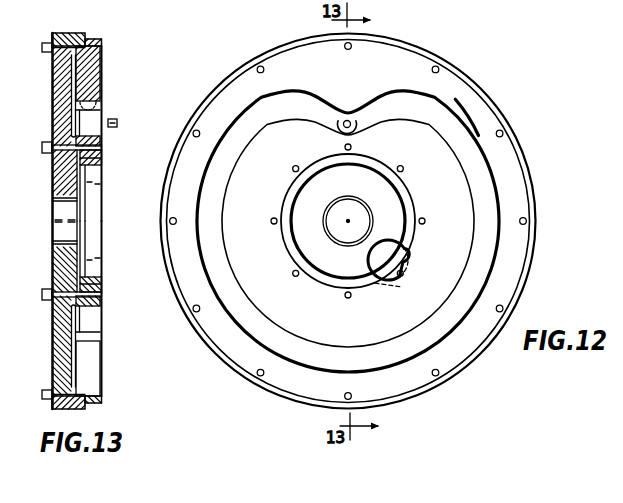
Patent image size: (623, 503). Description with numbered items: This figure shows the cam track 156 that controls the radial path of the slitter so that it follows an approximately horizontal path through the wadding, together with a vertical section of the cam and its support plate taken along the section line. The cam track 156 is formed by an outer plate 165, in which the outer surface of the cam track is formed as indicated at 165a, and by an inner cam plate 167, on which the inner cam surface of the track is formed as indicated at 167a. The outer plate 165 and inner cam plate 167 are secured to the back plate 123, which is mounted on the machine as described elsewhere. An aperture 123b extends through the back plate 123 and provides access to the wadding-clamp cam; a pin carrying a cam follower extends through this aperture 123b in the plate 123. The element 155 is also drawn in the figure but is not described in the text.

In FIG. 13, the back plate 123 is at (52, 180).
In FIG. 12, the aperture 123b is at (407, 252).
In FIG. 12, the pin 155 is at (358, 121).
In FIG. 13, the pin 155 is at (99, 130).
In FIG. 12, the cam track 156 is at (482, 163).
In FIG. 13, the cam track 156 is at (97, 365).
In FIG. 12, the outer plate 165 is at (362, 87).
In FIG. 13, the outer plate 165 is at (98, 68).
In FIG. 12, the outer surface of cam track 165a is at (459, 114).
In FIG. 13, the outer surface of cam track 165a is at (104, 111).
In FIG. 12, the inner cam plate 167 is at (363, 327).
In FIG. 13, the inner cam plate 167 is at (99, 322).
In FIG. 12, the inner cam surface of cam track 167a is at (478, 197).
In FIG. 13, the inner cam surface of cam track 167a is at (102, 350).